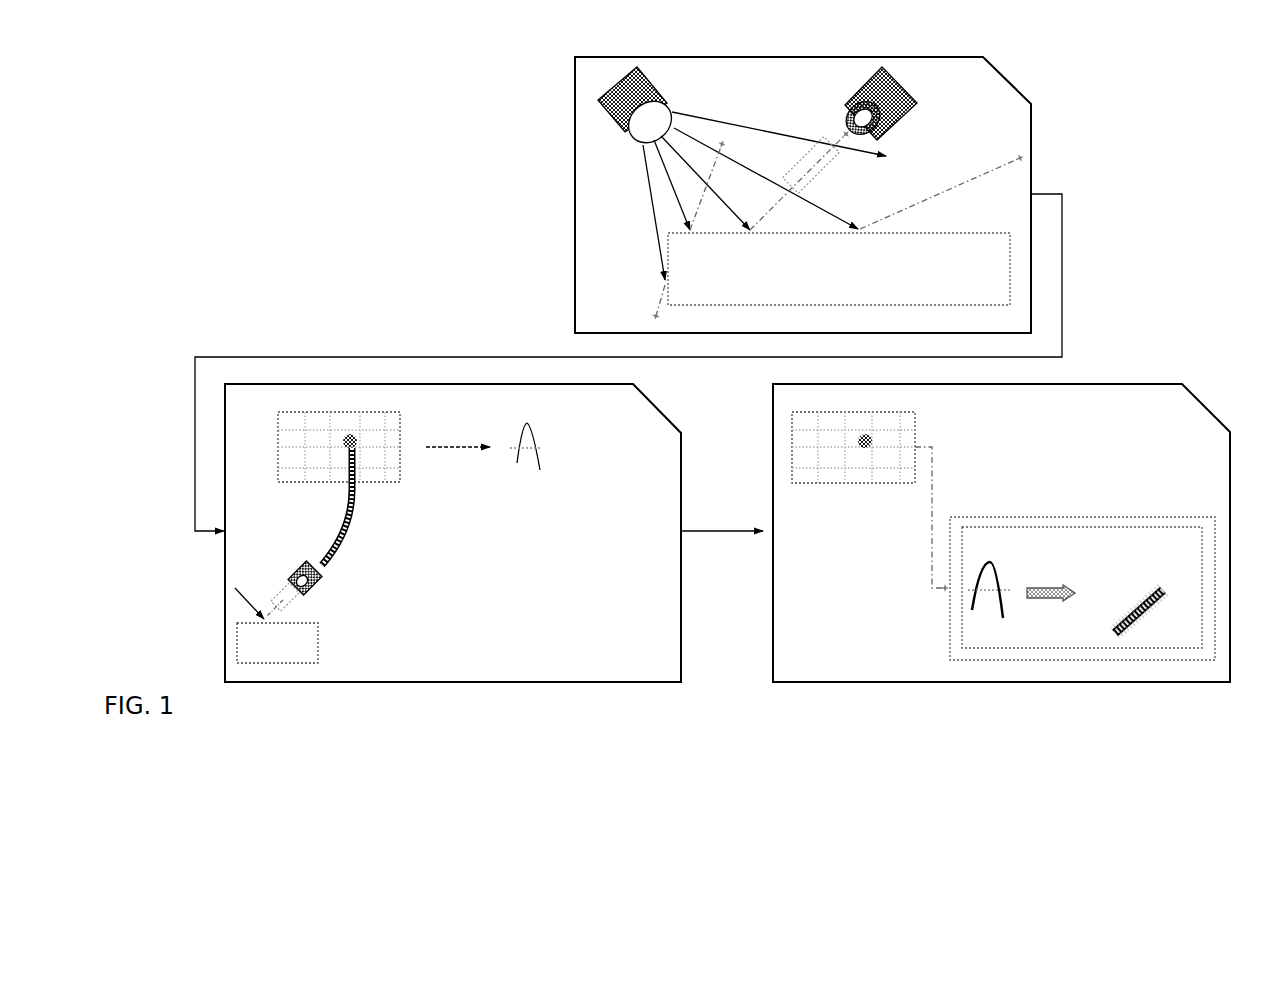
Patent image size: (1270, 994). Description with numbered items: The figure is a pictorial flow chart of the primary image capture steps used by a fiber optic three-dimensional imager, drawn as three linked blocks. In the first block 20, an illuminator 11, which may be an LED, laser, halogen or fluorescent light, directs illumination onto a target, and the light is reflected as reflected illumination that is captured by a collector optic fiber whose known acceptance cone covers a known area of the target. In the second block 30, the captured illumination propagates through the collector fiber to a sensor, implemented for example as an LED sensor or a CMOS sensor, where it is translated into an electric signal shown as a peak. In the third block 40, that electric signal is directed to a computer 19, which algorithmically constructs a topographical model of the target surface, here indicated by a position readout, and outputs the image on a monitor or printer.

The illuminator 11 is at (643, 73).
The computer 19 is at (1152, 517).
The illumination and collection unit 20 is at (993, 109).
The sensor unit 30 is at (643, 445).
The processing unit 40 is at (1182, 432).